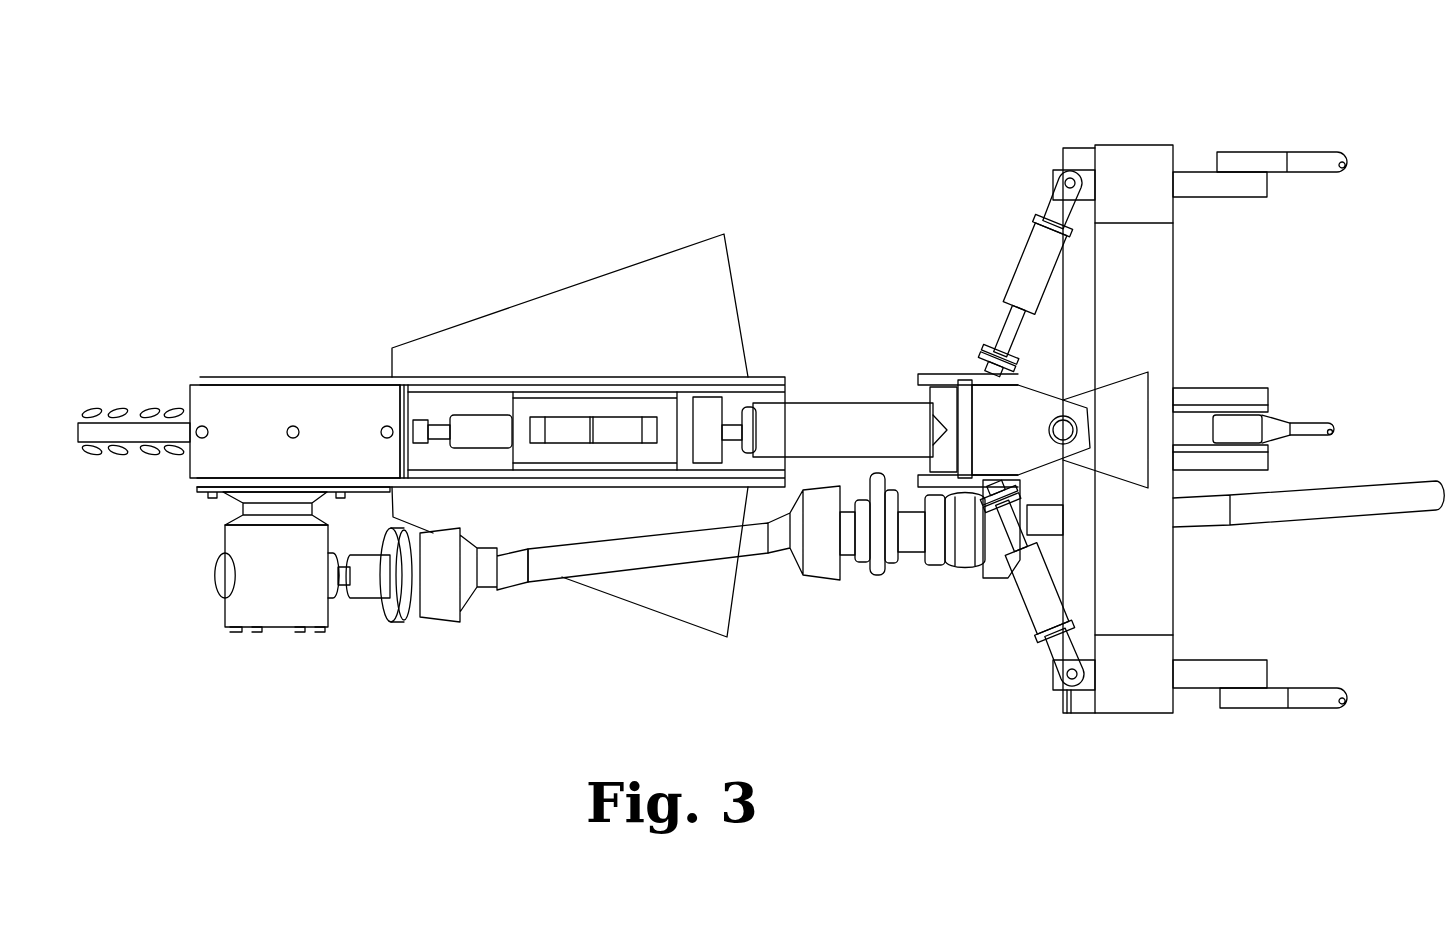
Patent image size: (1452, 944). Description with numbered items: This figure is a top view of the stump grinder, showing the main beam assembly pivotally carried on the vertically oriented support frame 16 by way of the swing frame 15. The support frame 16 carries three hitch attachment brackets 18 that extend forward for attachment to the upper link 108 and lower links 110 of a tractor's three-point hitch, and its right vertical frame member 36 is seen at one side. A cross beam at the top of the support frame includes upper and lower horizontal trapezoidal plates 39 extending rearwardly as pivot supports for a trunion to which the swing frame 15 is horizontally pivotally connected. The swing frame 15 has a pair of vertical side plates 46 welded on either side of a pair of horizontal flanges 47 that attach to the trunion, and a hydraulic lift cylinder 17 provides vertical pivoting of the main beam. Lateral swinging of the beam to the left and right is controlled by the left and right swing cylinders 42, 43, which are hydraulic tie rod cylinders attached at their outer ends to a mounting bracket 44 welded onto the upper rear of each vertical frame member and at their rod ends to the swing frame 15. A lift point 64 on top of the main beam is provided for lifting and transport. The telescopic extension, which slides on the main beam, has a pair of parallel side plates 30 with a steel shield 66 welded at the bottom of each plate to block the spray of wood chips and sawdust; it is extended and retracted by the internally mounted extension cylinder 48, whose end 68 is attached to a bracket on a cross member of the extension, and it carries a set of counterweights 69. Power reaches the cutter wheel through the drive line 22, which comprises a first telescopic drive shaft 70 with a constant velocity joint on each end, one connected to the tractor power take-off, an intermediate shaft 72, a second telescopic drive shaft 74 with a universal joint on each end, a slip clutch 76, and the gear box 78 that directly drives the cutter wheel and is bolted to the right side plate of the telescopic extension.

The swing frame 15 is at (960, 367).
The support frame 16 is at (1120, 143).
The hydraulic cylinder 17 is at (812, 390).
The hitch attachment brackets 18 is at (1227, 202).
The drive line 22 is at (500, 638).
The telescopic extension side plates 30 is at (273, 378).
The right vertical frame member 36 is at (1175, 705).
The trapezoidal plates 39 is at (1110, 445).
The left swing cylinder 42 is at (1010, 293).
The right swing cylinder 43 is at (1022, 600).
The mounting bracket 44 is at (1053, 185).
The vertical side plates 46 is at (947, 378).
The horizontal flanges 47 is at (993, 445).
The extension cylinder 48 is at (495, 418).
The lift point 64 is at (625, 415).
The steel shield 66 is at (662, 255).
The extension cylinder end 68 is at (427, 417).
The counterweights 69 is at (228, 407).
The first telescopic drive shaft 70 is at (1253, 527).
The intermediate shaft 72 is at (915, 540).
The second telescopic drive shaft 74 is at (598, 572).
The slip clutch 76 is at (393, 528).
The gear box 78 is at (223, 608).
The upper link 108 is at (1310, 423).
The lower links 110 is at (1313, 150).